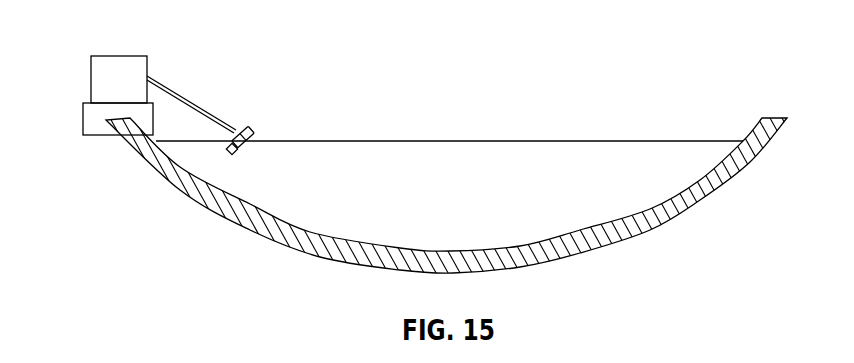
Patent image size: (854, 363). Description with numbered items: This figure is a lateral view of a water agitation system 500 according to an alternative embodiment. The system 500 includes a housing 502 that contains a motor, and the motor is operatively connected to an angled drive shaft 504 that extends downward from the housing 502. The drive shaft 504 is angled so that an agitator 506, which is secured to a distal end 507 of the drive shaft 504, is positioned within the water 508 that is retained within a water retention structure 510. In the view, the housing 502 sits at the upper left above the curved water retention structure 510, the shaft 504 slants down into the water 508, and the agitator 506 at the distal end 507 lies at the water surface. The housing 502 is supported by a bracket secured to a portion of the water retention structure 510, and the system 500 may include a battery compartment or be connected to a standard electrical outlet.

The water agitation system 500 is at (106, 50).
The housing 502 is at (91, 80).
The angled drive shaft 504 is at (195, 107).
The agitator 506 is at (254, 140).
The distal end 507 is at (241, 126).
The water 508 is at (472, 141).
The water retention structure 510 is at (152, 167).